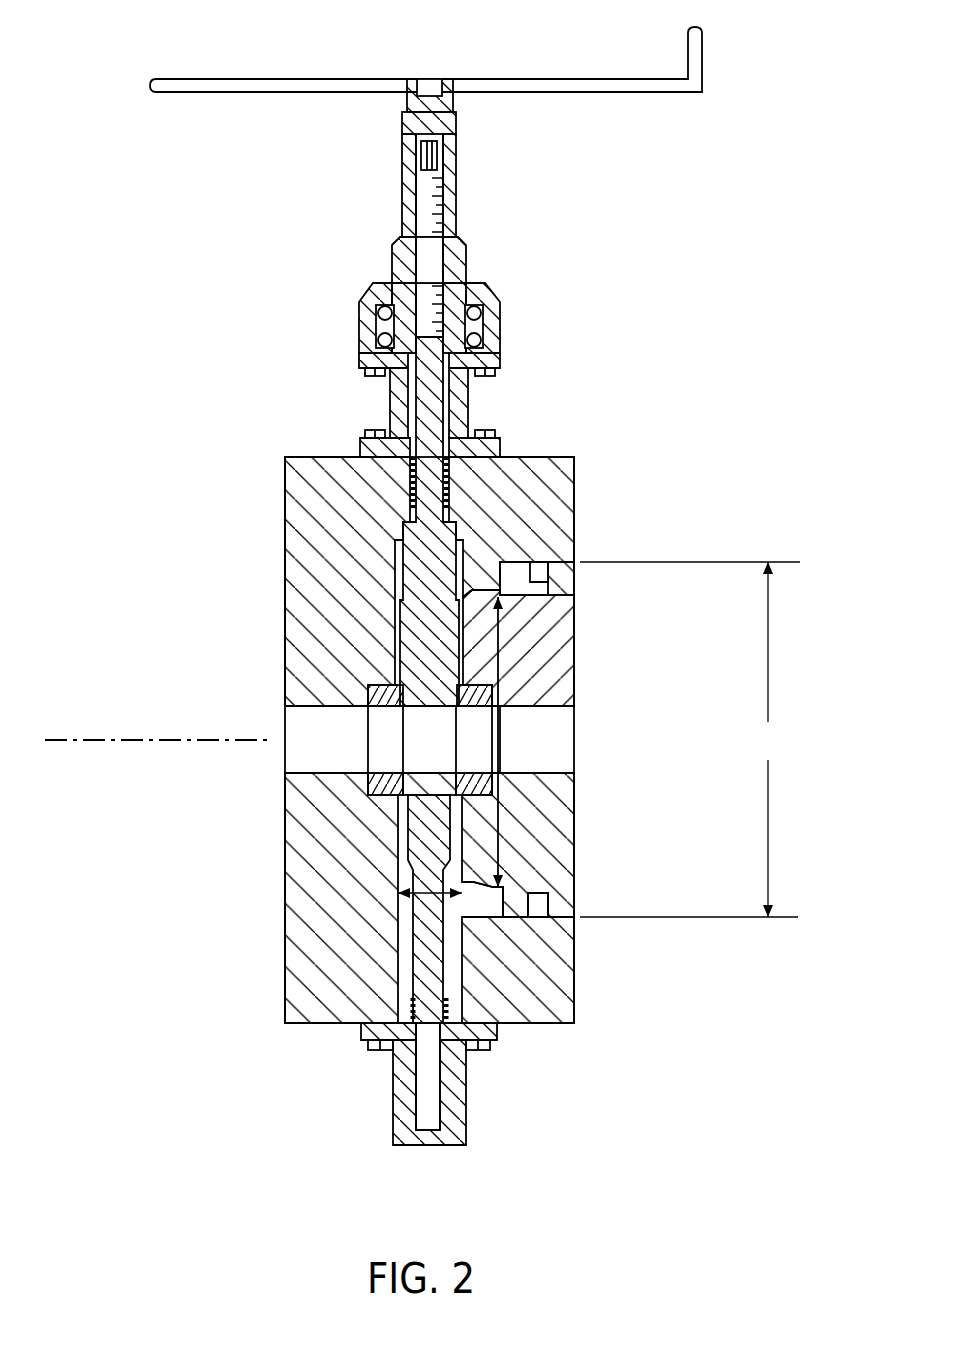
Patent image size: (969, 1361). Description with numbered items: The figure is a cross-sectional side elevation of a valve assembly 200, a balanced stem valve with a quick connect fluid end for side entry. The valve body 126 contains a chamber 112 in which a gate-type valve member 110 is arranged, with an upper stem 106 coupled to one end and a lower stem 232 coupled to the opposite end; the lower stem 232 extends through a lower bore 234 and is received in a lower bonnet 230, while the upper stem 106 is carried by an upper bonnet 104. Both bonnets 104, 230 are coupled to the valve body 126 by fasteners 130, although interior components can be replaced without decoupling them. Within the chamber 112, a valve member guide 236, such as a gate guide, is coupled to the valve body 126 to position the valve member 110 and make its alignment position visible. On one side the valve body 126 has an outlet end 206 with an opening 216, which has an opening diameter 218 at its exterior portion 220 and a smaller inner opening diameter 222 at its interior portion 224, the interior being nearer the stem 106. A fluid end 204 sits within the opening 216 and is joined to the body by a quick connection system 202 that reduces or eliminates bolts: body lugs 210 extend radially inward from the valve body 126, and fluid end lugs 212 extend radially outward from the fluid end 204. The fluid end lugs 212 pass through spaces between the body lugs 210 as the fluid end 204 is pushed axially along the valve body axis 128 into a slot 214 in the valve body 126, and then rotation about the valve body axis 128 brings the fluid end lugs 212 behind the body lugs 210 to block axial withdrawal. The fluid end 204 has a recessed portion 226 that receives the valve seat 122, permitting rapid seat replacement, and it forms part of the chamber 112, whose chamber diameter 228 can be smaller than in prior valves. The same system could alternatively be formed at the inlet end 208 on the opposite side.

The valve assembly 200 is at (676, 205).
The upper bonnet 104 is at (487, 362).
The stem 106 is at (428, 368).
The fasteners 130 is at (493, 437).
The chamber 112 is at (410, 1005).
The valve body 126 is at (560, 540).
The slot 214 is at (505, 555).
The fluid end lugs 212 is at (513, 575).
The quick connection system 202 is at (633, 573).
The exterior portion 220 is at (633, 546).
The valve member guide 236 is at (398, 582).
The valve member 110 is at (410, 663).
The recessed portion 226 is at (503, 685).
The inner opening diameter 222 is at (500, 780).
The valve seat 122 is at (473, 780).
The fluid end 204 is at (555, 845).
The outlet end 206 is at (590, 940).
The body lugs 210 is at (538, 907).
The interior portion 224 is at (483, 948).
The chamber diameter 228 is at (400, 895).
The lower bore 234 is at (385, 1035).
The lower bonnet 230 is at (428, 1147).
The lower stem 232 is at (430, 1012).
The valve body axis 128 is at (178, 742).
The opening diameter 218 is at (768, 739).
The opening 216 is at (662, 812).
The inlet end 208 is at (167, 906).